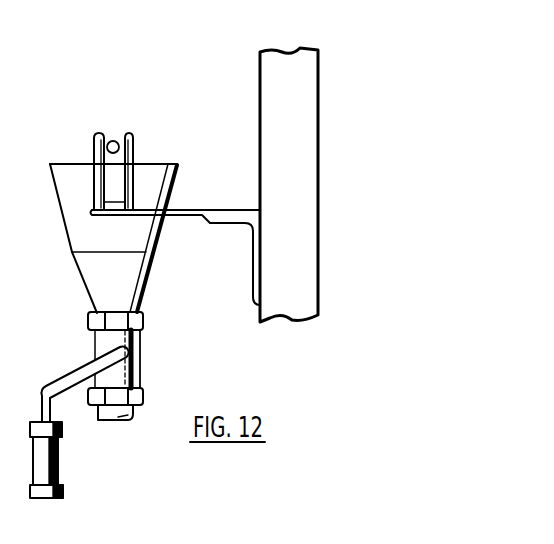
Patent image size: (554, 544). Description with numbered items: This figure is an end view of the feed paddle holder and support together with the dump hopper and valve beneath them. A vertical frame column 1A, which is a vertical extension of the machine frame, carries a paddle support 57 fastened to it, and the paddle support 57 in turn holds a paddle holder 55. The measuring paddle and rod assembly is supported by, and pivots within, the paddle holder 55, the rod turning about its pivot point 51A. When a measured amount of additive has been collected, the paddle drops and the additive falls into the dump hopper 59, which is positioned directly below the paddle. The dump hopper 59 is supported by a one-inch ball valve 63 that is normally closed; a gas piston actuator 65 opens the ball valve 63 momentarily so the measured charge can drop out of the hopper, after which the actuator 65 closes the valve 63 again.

The vertical frame column 1A is at (298, 205).
The paddle support 57 is at (187, 208).
The dump hopper 59 is at (58, 195).
The paddle holder 55 is at (135, 153).
The pivot point 51A is at (115, 140).
The ball valve 63 is at (139, 341).
The gas piston actuator 65 is at (58, 450).